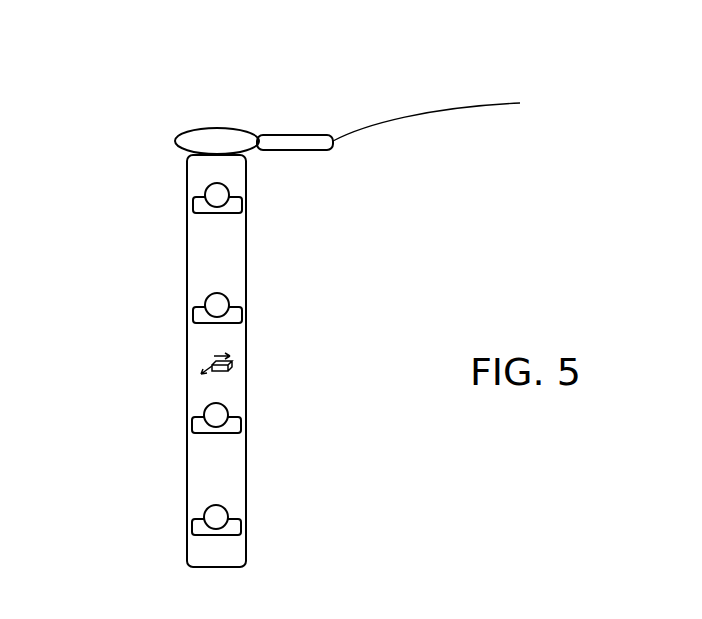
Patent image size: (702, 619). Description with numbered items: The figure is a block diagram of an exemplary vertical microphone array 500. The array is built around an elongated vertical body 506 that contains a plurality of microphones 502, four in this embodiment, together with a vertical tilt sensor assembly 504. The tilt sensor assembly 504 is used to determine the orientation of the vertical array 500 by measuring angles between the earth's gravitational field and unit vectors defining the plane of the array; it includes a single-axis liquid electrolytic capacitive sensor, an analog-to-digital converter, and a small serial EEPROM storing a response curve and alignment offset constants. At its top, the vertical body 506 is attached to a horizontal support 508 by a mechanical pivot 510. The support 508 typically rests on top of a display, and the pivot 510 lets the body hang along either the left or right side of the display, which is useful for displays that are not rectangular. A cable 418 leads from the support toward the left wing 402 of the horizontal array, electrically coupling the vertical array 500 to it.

The vertical array 500 is at (418, 475).
The microphones 502 is at (246, 198).
The vertical tilt sensor assembly 504 is at (246, 362).
The vertical body 506 is at (187, 243).
The horizontal support 508 is at (297, 132).
The pivot 510 is at (210, 128).
The cable 418 is at (390, 120).
The left wing 402 is at (598, 167).